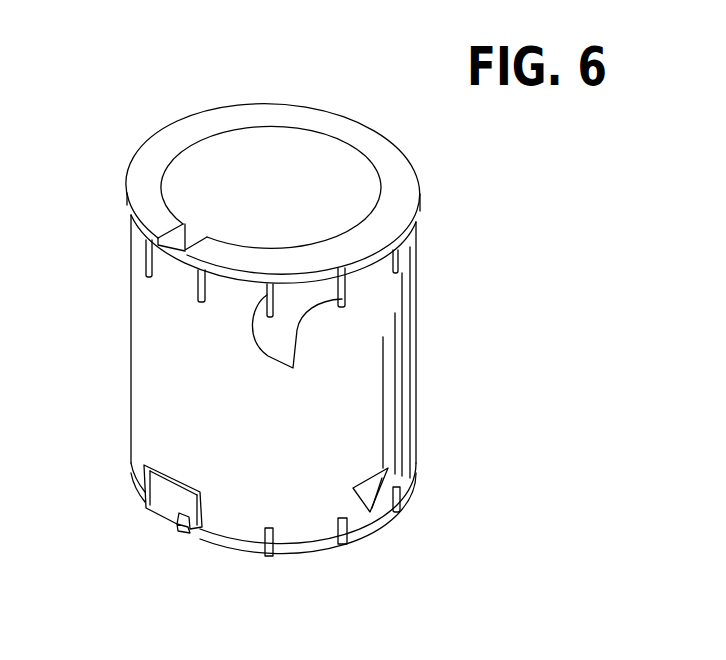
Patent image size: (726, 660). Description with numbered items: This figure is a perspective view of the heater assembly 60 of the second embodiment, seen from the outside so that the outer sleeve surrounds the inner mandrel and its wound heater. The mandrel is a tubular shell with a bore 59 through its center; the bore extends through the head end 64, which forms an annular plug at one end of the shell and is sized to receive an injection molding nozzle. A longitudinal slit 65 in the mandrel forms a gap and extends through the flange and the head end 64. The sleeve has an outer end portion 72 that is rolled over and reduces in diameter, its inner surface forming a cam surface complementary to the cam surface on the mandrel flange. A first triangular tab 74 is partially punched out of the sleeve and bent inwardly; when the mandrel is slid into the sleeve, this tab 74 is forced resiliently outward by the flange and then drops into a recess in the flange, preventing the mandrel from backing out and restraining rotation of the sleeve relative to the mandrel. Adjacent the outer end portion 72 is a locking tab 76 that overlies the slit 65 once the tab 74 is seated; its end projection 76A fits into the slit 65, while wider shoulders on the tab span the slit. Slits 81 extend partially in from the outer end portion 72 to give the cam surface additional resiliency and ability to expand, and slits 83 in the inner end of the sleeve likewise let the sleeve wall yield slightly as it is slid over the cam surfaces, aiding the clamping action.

The heater assembly 60 is at (268, 360).
The bore 59 is at (202, 170).
The head end 64 is at (403, 197).
The longitudinal slit 65 is at (190, 230).
The slits 83 is at (297, 340).
The locking tab 76 is at (174, 501).
The end projection 76A is at (178, 522).
The first triangular tab 74 is at (383, 483).
The outer end portion 72 is at (372, 527).
The slits 81 is at (342, 530).